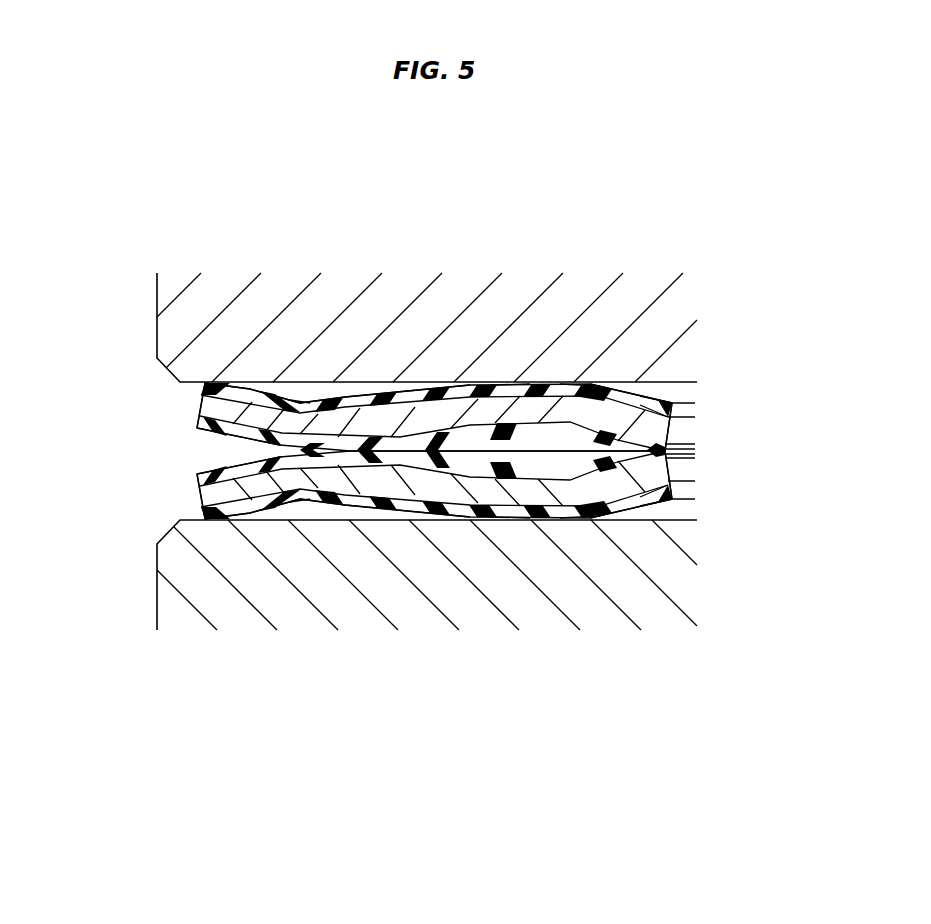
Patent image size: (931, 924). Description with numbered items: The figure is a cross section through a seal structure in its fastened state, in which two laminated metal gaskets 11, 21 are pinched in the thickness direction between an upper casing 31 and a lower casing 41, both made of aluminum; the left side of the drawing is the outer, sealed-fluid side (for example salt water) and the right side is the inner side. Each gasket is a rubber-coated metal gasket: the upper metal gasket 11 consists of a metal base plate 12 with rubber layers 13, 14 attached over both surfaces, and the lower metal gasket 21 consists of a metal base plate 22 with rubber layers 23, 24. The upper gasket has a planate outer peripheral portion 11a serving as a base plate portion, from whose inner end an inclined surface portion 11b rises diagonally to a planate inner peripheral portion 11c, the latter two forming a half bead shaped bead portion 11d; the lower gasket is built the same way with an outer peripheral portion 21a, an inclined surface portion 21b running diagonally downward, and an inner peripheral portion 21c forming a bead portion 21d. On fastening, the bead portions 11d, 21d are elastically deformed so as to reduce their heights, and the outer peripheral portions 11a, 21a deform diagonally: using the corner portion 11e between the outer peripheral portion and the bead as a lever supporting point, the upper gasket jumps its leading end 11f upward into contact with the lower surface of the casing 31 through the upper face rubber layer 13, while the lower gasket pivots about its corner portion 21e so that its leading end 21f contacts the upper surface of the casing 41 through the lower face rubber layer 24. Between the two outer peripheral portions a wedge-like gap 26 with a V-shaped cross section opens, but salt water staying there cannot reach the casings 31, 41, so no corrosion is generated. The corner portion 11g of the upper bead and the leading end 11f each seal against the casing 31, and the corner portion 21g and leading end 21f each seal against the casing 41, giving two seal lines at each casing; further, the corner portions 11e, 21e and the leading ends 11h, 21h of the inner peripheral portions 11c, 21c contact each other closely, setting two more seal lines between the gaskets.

The metal gasket 11 is at (350, 393).
The outer peripheral portion 11a is at (233, 412).
The inclined surface portion 11b is at (405, 415).
The inner peripheral portion 11c is at (622, 420).
The bead portion 11d is at (508, 370).
The corner portion 11e is at (303, 427).
The leading end 11f is at (208, 407).
The corner portion 11g is at (563, 410).
The leading end 11h is at (670, 440).
The metal base plate 12 is at (672, 418).
The rubber layer 13 is at (673, 405).
The rubber layer 14 is at (670, 450).
The metal gasket 21 is at (347, 512).
The outer peripheral portion 21a is at (233, 500).
The inclined surface portion 21b is at (407, 492).
The inner peripheral portion 21c is at (660, 496).
The bead portion 21d is at (513, 532).
The corner portion 21e is at (300, 487).
The leading end 21f is at (210, 503).
The corner portion 21g is at (565, 500).
The leading end 21h is at (668, 470).
The metal base plate 22 is at (668, 479).
The rubber layer 23 is at (668, 455).
The rubber layer 24 is at (672, 490).
The wedge-like gap 26 is at (223, 450).
The casing 31 is at (173, 328).
The casing 41 is at (182, 580).